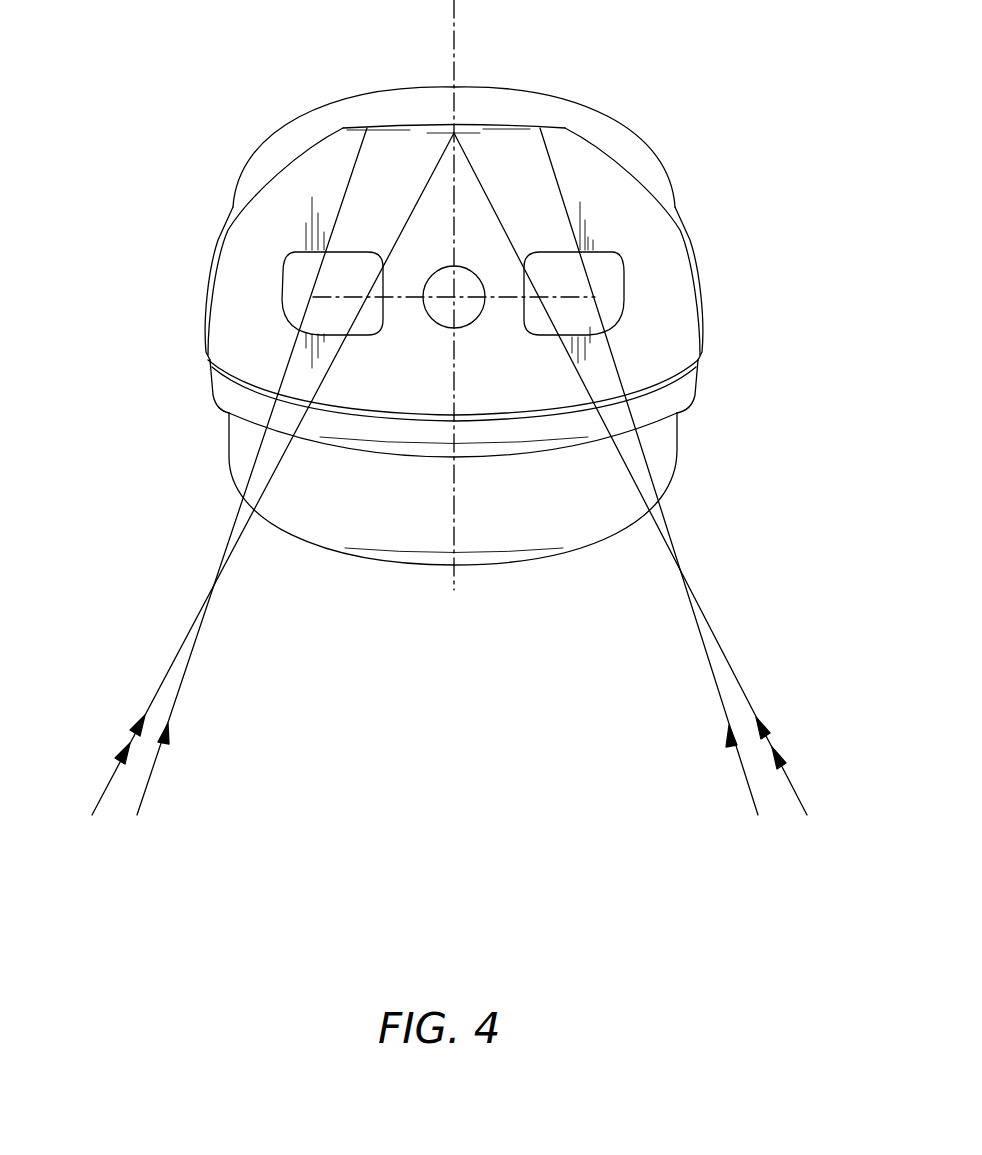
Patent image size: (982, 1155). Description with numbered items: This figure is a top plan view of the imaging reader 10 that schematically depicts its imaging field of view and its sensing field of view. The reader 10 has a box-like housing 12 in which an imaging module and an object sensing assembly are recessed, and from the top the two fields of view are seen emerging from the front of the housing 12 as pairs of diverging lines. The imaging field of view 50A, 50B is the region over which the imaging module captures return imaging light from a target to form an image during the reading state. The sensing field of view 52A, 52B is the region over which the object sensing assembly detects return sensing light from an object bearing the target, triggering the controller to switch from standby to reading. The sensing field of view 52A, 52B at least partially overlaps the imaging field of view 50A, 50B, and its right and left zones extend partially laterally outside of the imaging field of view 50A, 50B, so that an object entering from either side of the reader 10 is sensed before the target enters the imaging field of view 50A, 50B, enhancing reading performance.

The imaging reader 10 is at (633, 78).
The housing 12 is at (557, 105).
The imaging field of view 50A is at (182, 682).
The sensing field of view 52A is at (165, 675).
The imaging field of view 50B is at (720, 698).
The sensing field of view 52B is at (745, 692).